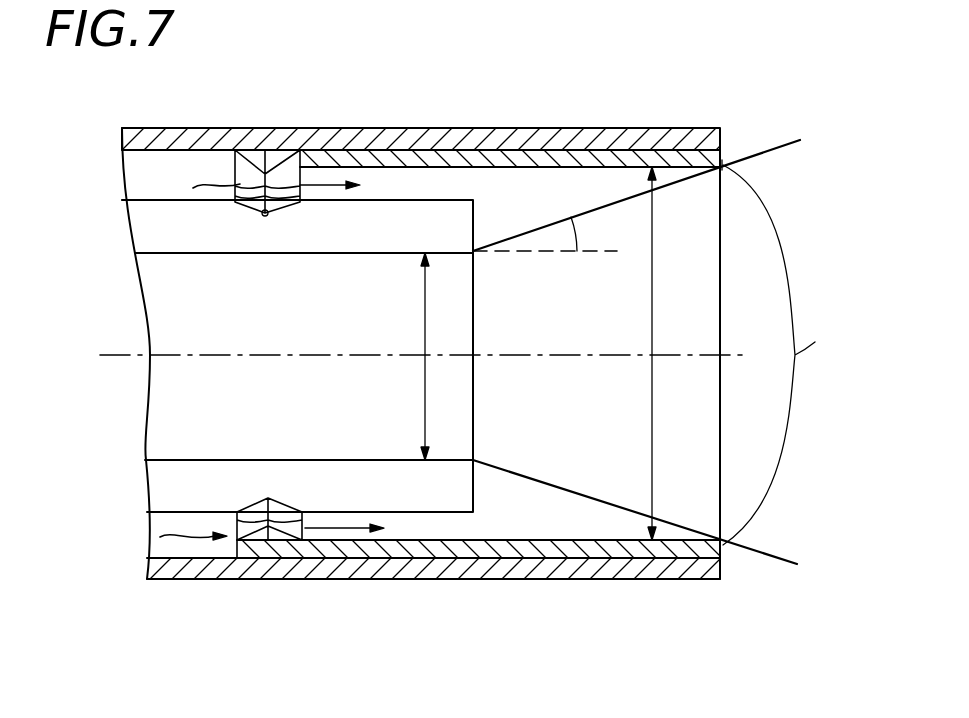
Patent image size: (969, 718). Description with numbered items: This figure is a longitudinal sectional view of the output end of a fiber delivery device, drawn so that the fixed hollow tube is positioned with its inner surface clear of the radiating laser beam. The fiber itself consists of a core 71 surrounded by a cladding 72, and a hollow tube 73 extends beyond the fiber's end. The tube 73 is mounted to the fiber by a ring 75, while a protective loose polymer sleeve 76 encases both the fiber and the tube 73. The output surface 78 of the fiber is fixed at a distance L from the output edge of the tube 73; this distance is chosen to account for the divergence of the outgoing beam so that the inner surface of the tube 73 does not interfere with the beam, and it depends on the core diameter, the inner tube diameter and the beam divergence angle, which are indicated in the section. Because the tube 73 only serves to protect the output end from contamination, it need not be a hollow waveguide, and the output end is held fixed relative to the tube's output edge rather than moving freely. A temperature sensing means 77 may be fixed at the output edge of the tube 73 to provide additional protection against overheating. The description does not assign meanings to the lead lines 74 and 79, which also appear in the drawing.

The core 71 is at (190, 400).
The cladding 72 is at (177, 487).
The hollow tube 73 is at (789, 355).
The inner liner 74 is at (400, 180).
The ring 75 is at (266, 211).
The protective loose polymer sleeve 76 is at (520, 146).
The temperature sensing means 77 is at (178, 160).
The output surface 78 is at (473, 305).
The outlet opening 79 is at (723, 240).